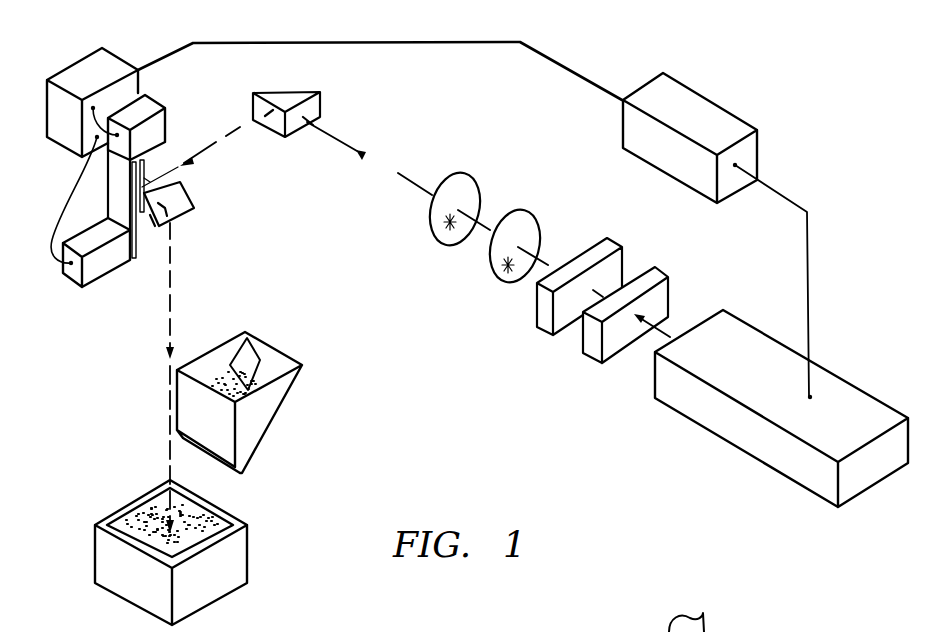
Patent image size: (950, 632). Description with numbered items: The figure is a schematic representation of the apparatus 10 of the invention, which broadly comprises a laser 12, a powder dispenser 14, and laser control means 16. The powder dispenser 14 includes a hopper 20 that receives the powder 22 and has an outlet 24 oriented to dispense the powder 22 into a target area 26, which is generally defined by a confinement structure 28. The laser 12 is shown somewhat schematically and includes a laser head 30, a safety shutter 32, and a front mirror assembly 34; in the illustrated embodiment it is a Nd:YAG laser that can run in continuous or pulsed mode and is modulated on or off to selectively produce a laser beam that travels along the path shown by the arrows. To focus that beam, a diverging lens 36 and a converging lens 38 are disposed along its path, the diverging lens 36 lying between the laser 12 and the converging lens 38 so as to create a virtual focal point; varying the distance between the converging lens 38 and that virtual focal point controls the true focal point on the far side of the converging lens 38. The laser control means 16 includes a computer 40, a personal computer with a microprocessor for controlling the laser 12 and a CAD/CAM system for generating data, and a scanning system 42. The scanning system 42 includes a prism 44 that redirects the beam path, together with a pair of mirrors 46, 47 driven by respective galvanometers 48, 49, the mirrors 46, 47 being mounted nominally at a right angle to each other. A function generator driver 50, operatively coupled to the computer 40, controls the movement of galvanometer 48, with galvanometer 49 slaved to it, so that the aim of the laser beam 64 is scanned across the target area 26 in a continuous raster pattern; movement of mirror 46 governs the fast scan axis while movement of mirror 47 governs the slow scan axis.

The apparatus 10 is at (670, 460).
The laser 12 is at (602, 388).
The powder dispenser 14 is at (289, 403).
The laser control means 16 is at (632, 60).
The hopper 20 is at (287, 403).
The powder 22 is at (243, 370).
The outlet 24 is at (240, 473).
The target area 26 is at (142, 530).
The confinement structure 28 is at (182, 550).
The laser head 30 is at (688, 420).
The safety shutter 32 is at (593, 338).
The front mirror assembly 34 is at (540, 312).
The diverging lens 36 is at (488, 275).
The converging lens 38 is at (428, 237).
The computer 40 is at (717, 100).
The scanning system 42 is at (108, 41).
The prism 44 is at (320, 98).
The mirror 46 is at (152, 178).
The mirror 47 is at (188, 198).
The galvanometer 48 is at (143, 97).
The galvanometer 49 is at (93, 280).
The function generator driver 50 is at (77, 68).
The laser beam 64 is at (168, 453).